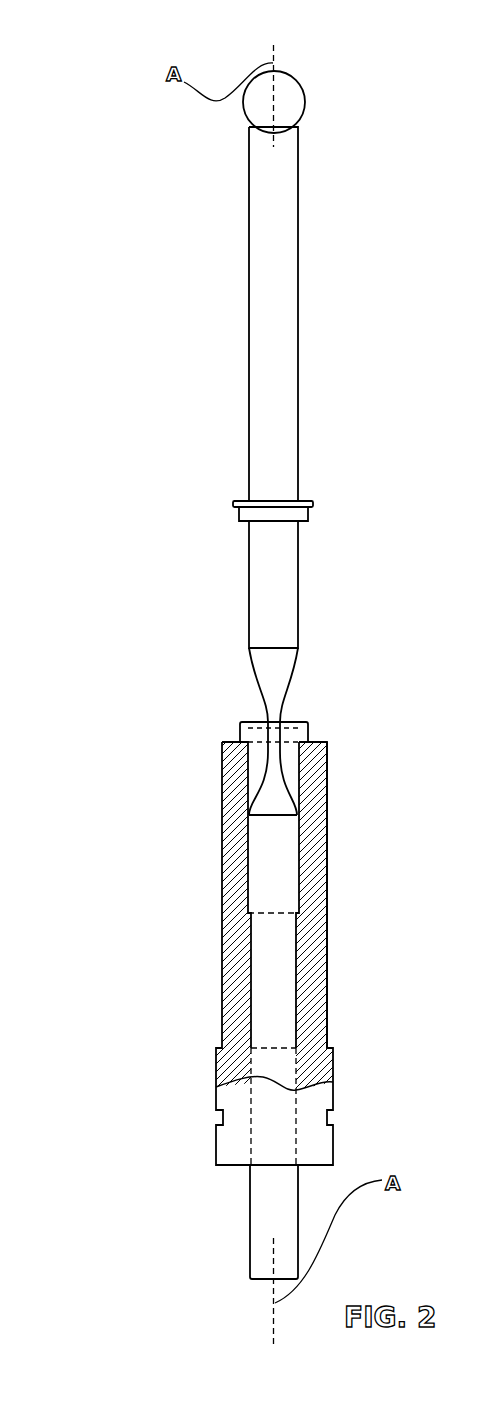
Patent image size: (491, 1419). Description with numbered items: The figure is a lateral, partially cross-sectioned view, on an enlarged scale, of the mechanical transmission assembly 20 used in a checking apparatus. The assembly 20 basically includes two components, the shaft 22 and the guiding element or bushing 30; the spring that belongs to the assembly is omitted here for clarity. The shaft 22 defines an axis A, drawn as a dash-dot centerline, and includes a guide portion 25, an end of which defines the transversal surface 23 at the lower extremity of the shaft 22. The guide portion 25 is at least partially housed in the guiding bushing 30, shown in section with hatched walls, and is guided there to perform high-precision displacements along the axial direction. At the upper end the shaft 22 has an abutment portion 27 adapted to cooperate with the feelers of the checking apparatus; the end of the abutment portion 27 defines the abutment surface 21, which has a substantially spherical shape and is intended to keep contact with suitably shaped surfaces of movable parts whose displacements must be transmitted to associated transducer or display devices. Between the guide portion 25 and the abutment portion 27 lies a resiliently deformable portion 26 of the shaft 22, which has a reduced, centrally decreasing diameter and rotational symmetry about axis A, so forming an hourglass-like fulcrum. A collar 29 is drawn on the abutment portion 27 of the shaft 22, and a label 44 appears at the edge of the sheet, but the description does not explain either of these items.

The mechanical transmission assembly 20 is at (117, 287).
The abutment surface 21 is at (292, 77).
The shaft 22 is at (176, 597).
The transversal surface 23 is at (256, 1292).
The guide portion 25 is at (263, 953).
The resiliently deformable portion 26 is at (275, 703).
The abutment portion 27 is at (268, 437).
The collar 29 is at (238, 517).
The guiding bushing 30 is at (228, 822).
The component 44 is at (480, 289).